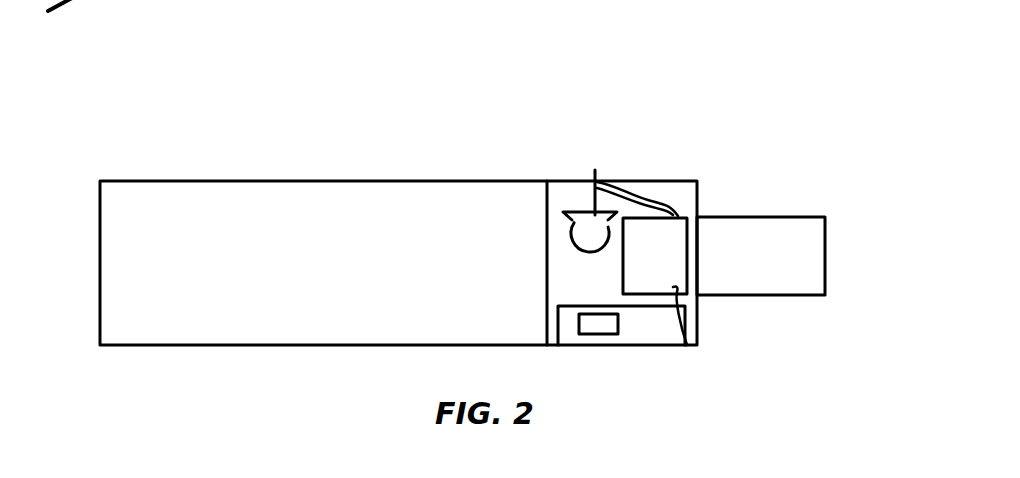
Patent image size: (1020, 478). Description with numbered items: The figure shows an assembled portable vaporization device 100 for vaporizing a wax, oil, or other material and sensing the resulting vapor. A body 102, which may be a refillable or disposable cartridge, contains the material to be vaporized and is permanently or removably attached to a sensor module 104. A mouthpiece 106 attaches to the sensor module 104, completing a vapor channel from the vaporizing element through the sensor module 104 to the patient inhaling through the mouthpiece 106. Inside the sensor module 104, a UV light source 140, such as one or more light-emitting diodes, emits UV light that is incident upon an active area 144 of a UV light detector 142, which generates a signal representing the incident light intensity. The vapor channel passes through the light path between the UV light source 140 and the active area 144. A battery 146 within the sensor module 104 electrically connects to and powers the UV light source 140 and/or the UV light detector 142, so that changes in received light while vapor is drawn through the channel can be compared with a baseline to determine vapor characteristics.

The vaporization device 100 is at (178, 373).
The body 102 is at (313, 168).
The sensor module 104 is at (556, 293).
The mouthpiece 106 is at (782, 216).
The UV light source 140 is at (586, 208).
The UV light detector 142 is at (577, 307).
The active area 144 is at (600, 327).
The battery 146 is at (661, 237).